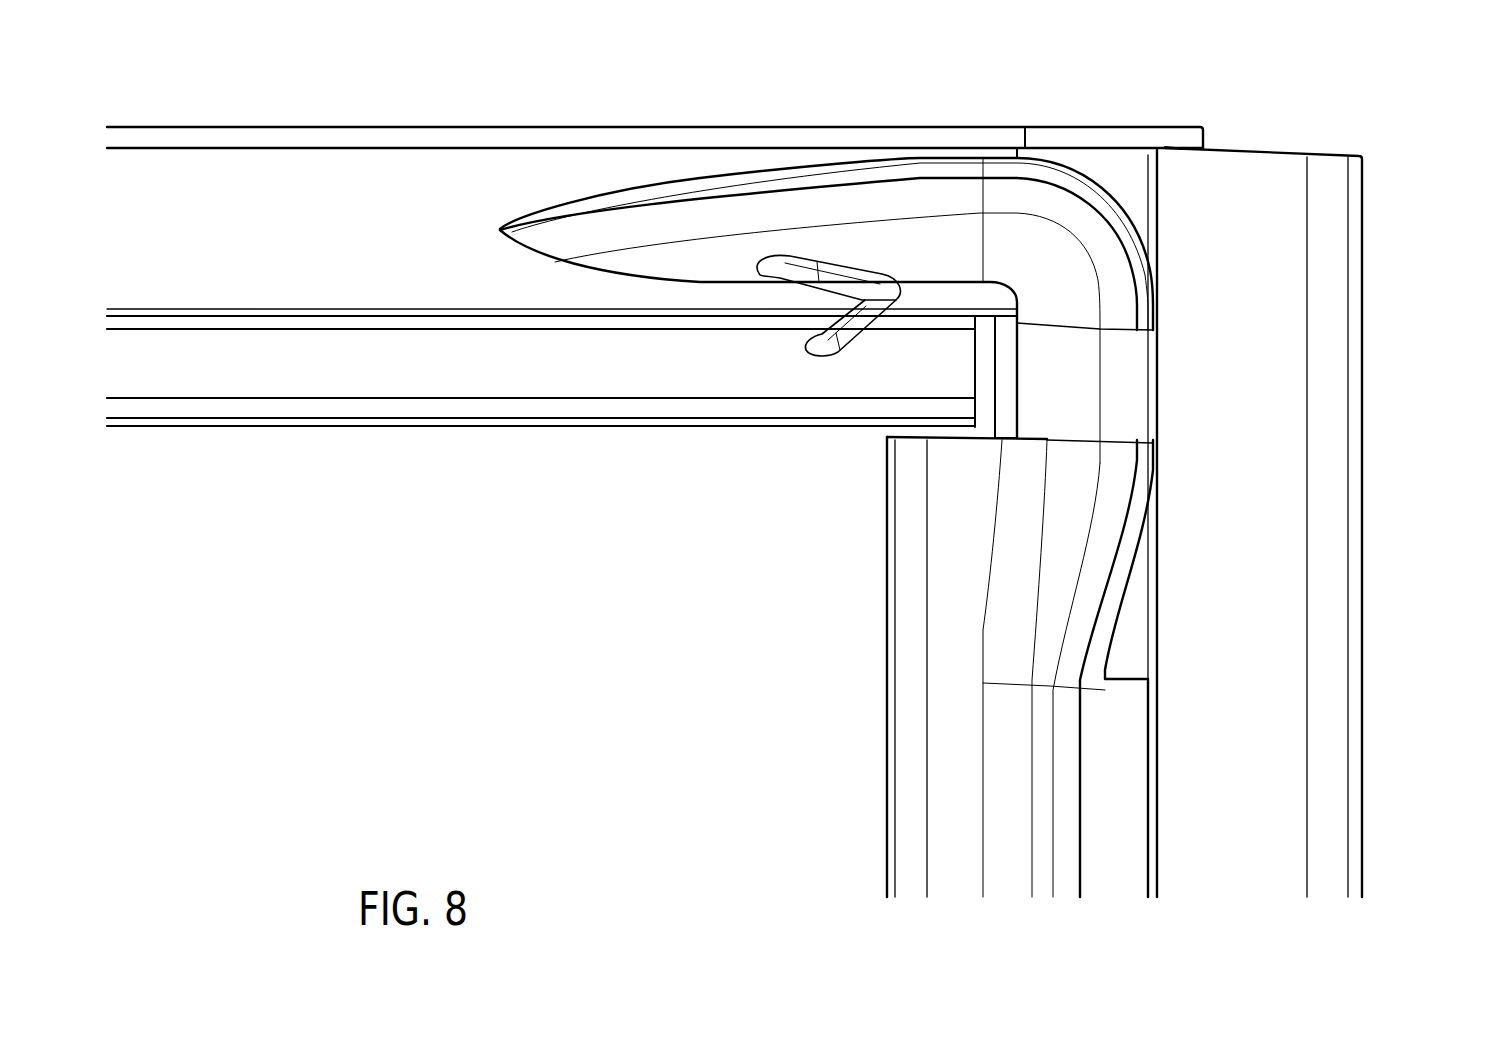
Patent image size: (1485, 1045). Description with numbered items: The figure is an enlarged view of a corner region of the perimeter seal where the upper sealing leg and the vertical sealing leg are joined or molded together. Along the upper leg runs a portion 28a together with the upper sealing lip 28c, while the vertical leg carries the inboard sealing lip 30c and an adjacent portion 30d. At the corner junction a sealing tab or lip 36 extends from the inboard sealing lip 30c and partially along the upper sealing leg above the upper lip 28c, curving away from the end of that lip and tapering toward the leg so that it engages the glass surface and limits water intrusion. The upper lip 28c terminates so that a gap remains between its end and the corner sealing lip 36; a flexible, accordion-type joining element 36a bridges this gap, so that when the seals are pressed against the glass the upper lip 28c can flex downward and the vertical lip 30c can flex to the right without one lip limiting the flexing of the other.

The first frame member 28a is at (428, 193).
The upper sealing lip 28c is at (413, 400).
The corner sealing lip 36 is at (935, 203).
The flexible joining element 36a is at (853, 302).
The fourth frame member 30d is at (1332, 675).
The inboard sealing lip 30c is at (1085, 766).